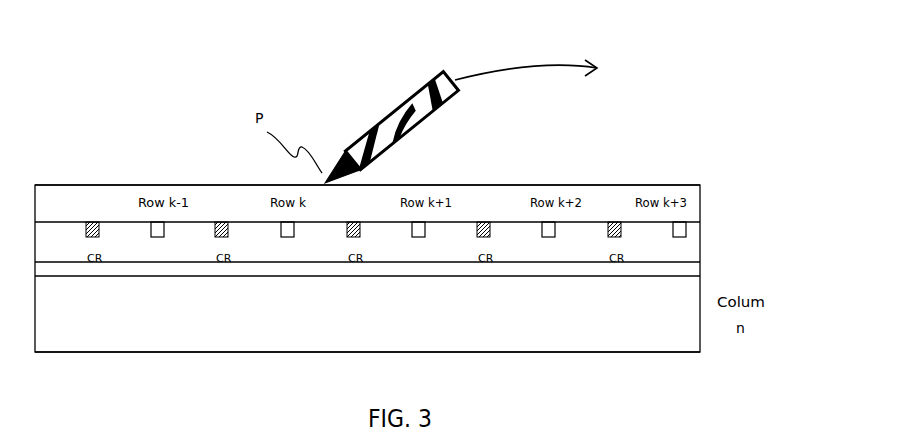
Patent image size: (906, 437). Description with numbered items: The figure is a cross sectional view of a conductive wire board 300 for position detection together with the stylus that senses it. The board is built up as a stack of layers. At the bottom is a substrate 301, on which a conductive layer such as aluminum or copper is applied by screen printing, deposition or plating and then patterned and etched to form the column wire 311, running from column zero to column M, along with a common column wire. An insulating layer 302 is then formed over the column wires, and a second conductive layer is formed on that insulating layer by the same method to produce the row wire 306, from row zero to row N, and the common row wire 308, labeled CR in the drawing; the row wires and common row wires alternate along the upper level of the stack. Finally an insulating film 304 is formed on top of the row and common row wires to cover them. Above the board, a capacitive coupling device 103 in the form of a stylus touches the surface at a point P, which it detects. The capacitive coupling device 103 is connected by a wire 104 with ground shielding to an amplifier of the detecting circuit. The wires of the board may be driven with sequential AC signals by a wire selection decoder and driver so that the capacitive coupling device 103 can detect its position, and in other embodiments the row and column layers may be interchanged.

The conductive wire board 300 is at (163, 158).
The capacitive coupling device 103 is at (370, 128).
The wire with ground shielding 104 is at (527, 67).
The insulating film 304 is at (609, 193).
The insulating layer 302 is at (687, 250).
The column wire 311 is at (693, 270).
The common row wire CR 308 is at (348, 237).
The row wire 306 is at (412, 248).
The substrate 301 is at (582, 321).